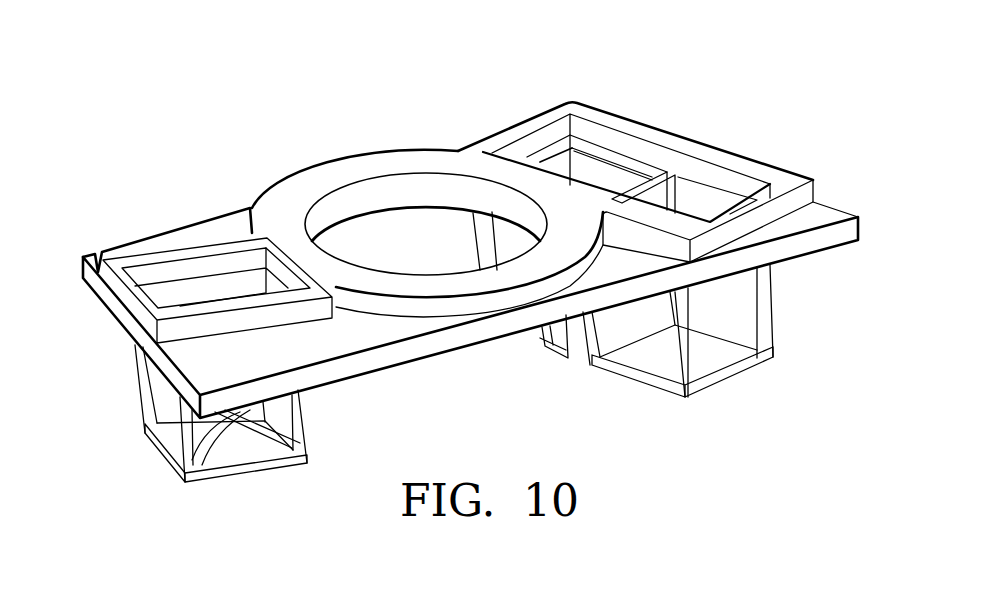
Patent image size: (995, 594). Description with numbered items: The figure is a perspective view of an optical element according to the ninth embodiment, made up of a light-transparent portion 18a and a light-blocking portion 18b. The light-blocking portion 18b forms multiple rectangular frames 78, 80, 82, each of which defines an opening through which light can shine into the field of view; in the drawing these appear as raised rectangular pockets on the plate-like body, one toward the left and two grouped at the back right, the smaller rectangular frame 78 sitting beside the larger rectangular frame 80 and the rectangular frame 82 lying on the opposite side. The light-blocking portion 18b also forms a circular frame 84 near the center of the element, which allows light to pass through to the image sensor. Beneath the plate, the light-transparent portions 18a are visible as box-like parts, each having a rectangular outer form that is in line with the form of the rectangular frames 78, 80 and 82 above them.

The light-transparent portion 18a is at (253, 446).
The light-blocking portion 18b is at (207, 227).
The rectangular frame 78 is at (703, 217).
The rectangular frame 80 is at (603, 137).
The rectangular frame 82 is at (217, 310).
The circular frame 84 is at (387, 155).